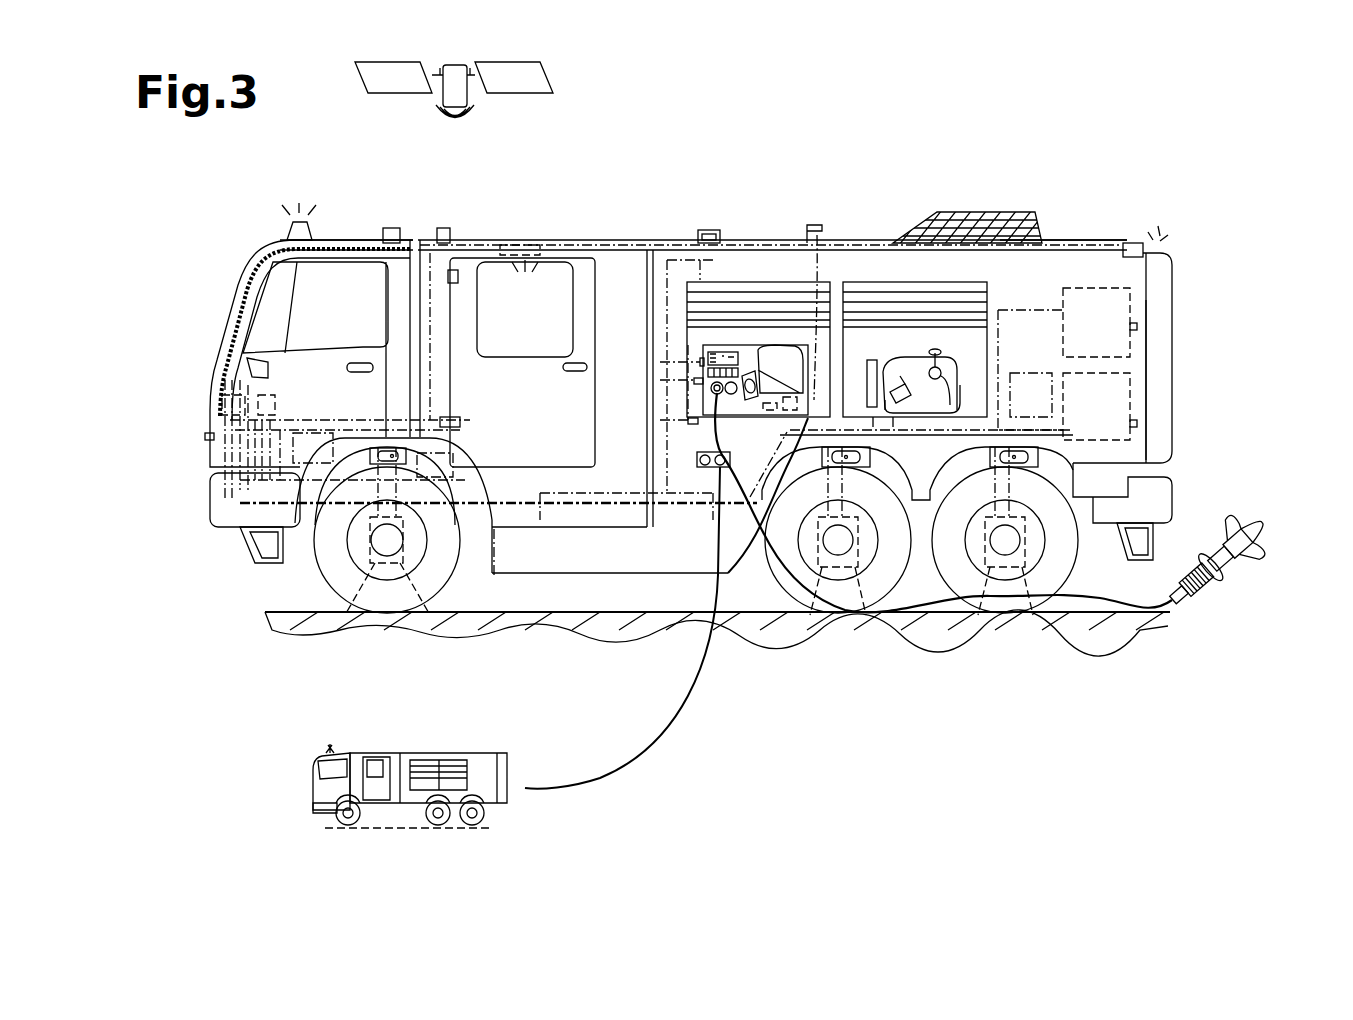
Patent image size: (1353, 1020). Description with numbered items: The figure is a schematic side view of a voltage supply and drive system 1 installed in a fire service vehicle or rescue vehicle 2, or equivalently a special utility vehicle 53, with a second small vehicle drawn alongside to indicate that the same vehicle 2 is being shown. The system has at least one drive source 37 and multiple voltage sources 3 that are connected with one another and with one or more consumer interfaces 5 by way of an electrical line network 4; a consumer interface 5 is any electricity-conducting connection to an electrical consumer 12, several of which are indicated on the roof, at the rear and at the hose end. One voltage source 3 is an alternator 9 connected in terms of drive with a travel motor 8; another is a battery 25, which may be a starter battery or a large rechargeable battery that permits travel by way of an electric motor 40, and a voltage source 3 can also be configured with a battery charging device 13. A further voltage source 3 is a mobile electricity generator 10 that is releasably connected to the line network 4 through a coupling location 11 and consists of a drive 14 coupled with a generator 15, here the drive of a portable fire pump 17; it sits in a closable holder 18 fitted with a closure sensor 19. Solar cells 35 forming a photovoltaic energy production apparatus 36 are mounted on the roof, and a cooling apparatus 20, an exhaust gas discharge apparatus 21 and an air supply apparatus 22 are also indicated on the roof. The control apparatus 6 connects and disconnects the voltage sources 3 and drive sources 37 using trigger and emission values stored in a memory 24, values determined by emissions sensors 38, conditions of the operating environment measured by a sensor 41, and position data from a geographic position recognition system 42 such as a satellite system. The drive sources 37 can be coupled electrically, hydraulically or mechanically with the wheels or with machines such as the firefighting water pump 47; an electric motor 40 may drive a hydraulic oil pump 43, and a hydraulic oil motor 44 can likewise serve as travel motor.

The voltage supply and drive system 1 is at (1186, 138).
The fire service vehicle or rescue vehicle 2 is at (234, 238).
The voltage source 3 is at (782, 332).
The electrical line network 4 is at (570, 508).
The consumer interface 5 is at (749, 357).
The control apparatus 6 is at (226, 420).
The travel motor 8 is at (1172, 412).
The alternator 9 is at (256, 506).
The mobile electricity generator 10 is at (742, 403).
The coupling location 11 is at (692, 355).
The consumer 12 is at (325, 196).
The battery charging device 13 is at (720, 350).
The drive 14 is at (903, 367).
The generator 15 is at (874, 368).
The portable fire pump 17 is at (1120, 405).
The holder 18 is at (730, 345).
The closure sensor 19 is at (690, 426).
The cooling apparatus 20 is at (694, 230).
The exhaust gas discharge apparatus 21 is at (826, 215).
The air supply apparatus 22 is at (706, 232).
The memory 24 is at (216, 412).
The battery 25 is at (433, 478).
The solar cells 35 is at (985, 206).
The photovoltaic energy production apparatus 36 is at (966, 212).
The drive source 37 is at (1110, 382).
The emissions sensor 38 is at (443, 228).
The electric motor 40 is at (856, 567).
The sensor 41 is at (207, 437).
The geographic position recognition system 42 is at (392, 228).
The hydraulic oil pump 43 is at (1042, 417).
The hydraulic oil motor 44 is at (1022, 567).
The firefighting water pump 47 is at (1113, 310).
The special utility vehicle 53 is at (238, 190).